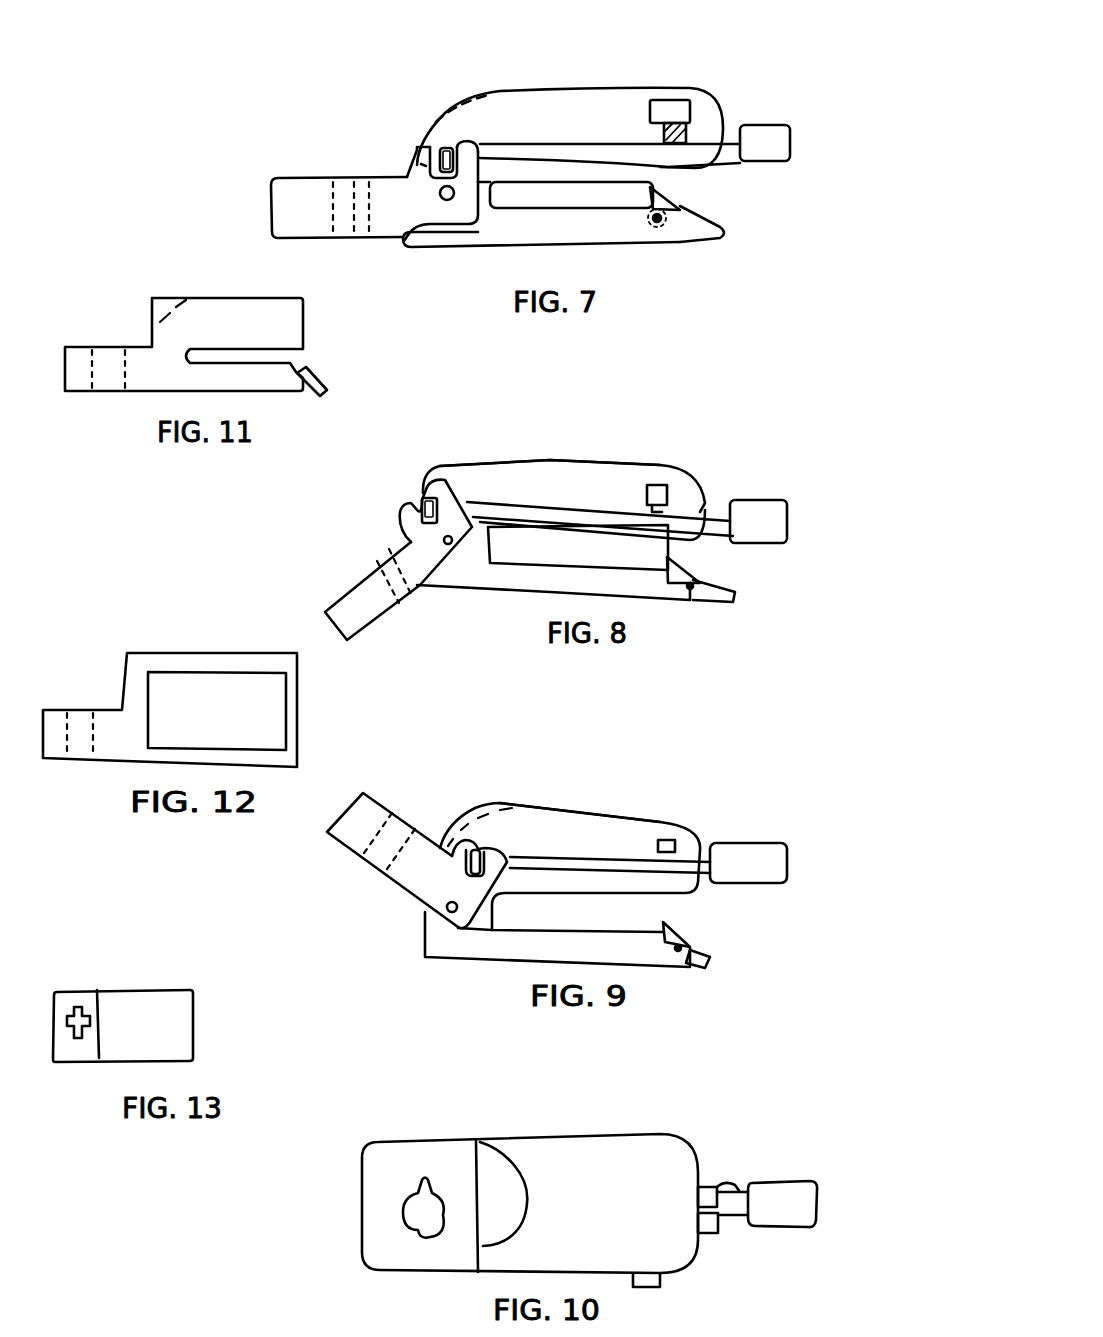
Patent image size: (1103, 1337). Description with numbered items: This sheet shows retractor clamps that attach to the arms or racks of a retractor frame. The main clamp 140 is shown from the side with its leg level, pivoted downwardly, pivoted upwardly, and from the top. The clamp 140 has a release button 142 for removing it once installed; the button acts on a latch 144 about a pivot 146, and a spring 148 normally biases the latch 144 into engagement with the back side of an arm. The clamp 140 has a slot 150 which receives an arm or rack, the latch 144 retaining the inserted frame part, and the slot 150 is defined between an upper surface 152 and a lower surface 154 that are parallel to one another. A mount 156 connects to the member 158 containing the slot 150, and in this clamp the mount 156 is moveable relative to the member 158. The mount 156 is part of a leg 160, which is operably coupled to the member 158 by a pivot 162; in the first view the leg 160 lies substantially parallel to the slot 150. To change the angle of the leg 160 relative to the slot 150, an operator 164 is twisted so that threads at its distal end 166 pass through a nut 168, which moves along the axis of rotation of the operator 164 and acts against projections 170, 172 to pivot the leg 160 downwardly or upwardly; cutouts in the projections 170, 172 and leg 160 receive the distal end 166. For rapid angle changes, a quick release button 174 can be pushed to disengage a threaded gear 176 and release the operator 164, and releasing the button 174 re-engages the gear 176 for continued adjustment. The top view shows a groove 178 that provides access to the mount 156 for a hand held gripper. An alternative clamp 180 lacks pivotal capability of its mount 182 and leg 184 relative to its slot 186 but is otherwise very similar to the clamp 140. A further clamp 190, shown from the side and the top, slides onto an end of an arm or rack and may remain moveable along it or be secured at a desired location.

In FIG. 7, the clamp 140 is at (652, 44).
In FIG. 8, the clamp 140 is at (652, 446).
In FIG. 9, the clamp 140 is at (655, 778).
In FIG. 7, the release button 142 is at (688, 223).
In FIG. 10, the release button 142 is at (720, 1228).
In FIG. 7, the latch 144 is at (658, 190).
In FIG. 7, the pivot 146 is at (682, 228).
In FIG. 7, the spring 148 is at (657, 222).
In FIG. 7, the slot 150 is at (605, 208).
In FIG. 7, the upper surface 152 is at (620, 233).
In FIG. 7, the lower surface 154 is at (725, 165).
In FIG. 7, the mount 156 is at (338, 176).
In FIG. 10, the mount 156 is at (432, 1197).
In FIG. 7, the member 158 is at (635, 133).
In FIG. 8, the member 158 is at (580, 496).
In FIG. 9, the member 158 is at (605, 846).
In FIG. 10, the member 158 is at (530, 1203).
In FIG. 7, the leg 160 is at (318, 216).
In FIG. 8, the leg 160 is at (362, 602).
In FIG. 9, the leg 160 is at (370, 840).
In FIG. 10, the leg 160 is at (418, 1172).
In FIG. 7, the pivot 162 is at (400, 233).
In FIG. 7, the operator 164 is at (735, 130).
In FIG. 10, the operator 164 is at (735, 1203).
In FIG. 7, the distal end 166 is at (496, 139).
In FIG. 7, the nut 168 is at (446, 147).
In FIG. 7, the projection 170 is at (490, 135).
In FIG. 7, the projection 172 is at (418, 150).
In FIG. 7, the quick release button 174 is at (673, 110).
In FIG. 10, the quick release button 174 is at (652, 1288).
In FIG. 7, the threaded gear 176 is at (683, 133).
In FIG. 10, the groove 178 is at (487, 1210).
In FIG. 11, the clamp 180 is at (200, 277).
In FIG. 11, the mount 182 is at (108, 358).
In FIG. 11, the leg 184 is at (73, 385).
In FIG. 11, the slot 186 is at (290, 354).
In FIG. 12, the clamp 190 is at (157, 629).
In FIG. 13, the clamp 190 is at (103, 959).